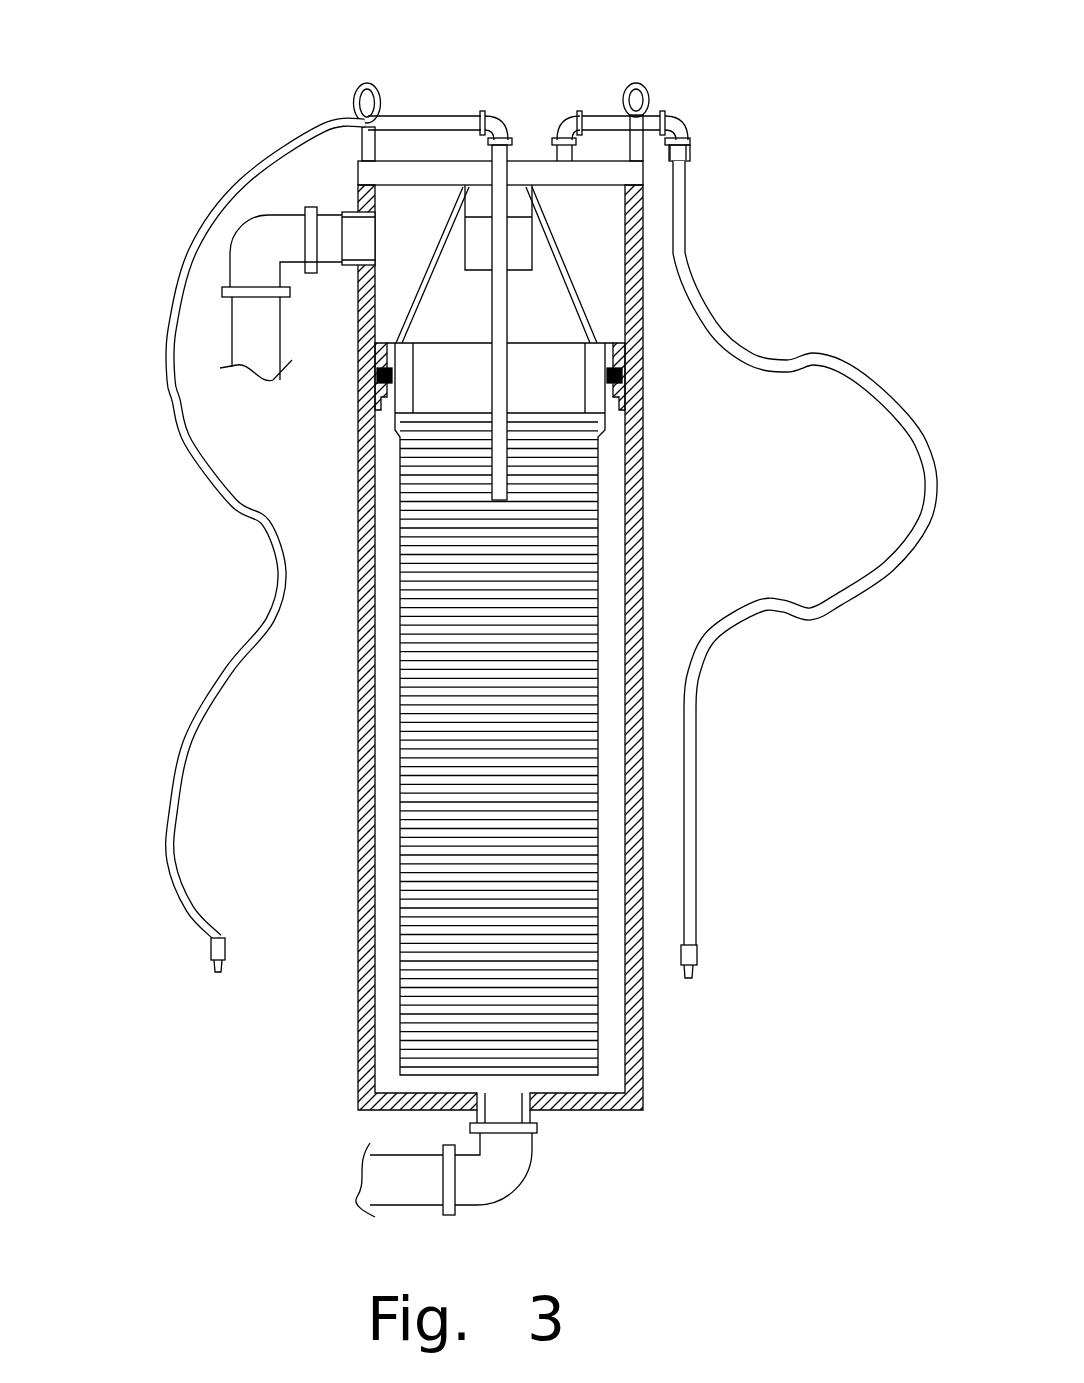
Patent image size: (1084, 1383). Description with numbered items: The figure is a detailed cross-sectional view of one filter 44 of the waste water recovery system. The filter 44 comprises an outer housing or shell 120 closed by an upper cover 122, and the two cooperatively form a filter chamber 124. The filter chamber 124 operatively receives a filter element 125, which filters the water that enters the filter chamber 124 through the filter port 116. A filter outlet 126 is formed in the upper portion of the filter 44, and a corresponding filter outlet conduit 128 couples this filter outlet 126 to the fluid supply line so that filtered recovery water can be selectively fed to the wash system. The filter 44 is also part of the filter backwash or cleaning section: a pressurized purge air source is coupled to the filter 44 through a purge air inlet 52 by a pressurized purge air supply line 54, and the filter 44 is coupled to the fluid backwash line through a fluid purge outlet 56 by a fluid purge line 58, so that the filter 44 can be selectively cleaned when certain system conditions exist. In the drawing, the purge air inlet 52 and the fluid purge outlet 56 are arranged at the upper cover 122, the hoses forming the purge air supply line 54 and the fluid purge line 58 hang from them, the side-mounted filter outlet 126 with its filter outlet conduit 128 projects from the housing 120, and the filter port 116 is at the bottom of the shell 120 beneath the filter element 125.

The filter 44 is at (715, 267).
The purge air inlet 52 is at (503, 140).
The pressurized purge air supply line 54 is at (177, 340).
The fluid purge outlet 56 is at (565, 143).
The fluid purge line 58 is at (728, 328).
The filter port 116 is at (527, 1115).
The outer housing or shell 120 is at (643, 548).
The upper cover 122 is at (532, 157).
The filter chamber 124 is at (613, 527).
The filter element 125 is at (572, 621).
The filter outlet 126 is at (353, 253).
The filter outlet conduit 128 is at (253, 350).